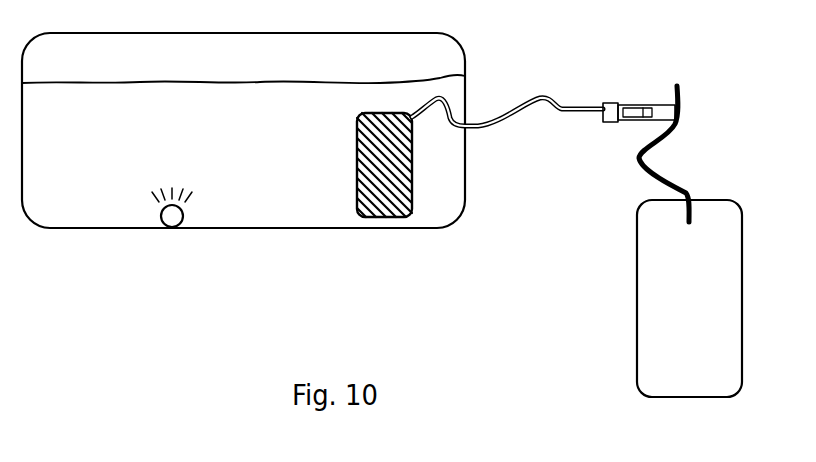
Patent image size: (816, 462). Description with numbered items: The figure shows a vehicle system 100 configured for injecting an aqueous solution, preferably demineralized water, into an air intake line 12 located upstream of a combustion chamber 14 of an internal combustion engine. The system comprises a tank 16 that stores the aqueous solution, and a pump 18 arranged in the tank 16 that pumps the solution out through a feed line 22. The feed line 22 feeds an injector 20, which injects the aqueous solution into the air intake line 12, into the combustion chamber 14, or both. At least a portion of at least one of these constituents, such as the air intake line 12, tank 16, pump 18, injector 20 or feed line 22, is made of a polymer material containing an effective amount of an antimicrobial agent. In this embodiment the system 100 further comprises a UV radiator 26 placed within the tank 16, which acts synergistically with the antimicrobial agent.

The vehicle system 100 is at (133, 290).
The tank 16 is at (105, 143).
The UV radiator 26 is at (172, 178).
The pump 18 is at (345, 173).
The feed line 22 is at (516, 94).
The injector 20 is at (627, 95).
The air intake line 12 is at (694, 93).
The combustion chamber 14 is at (698, 339).